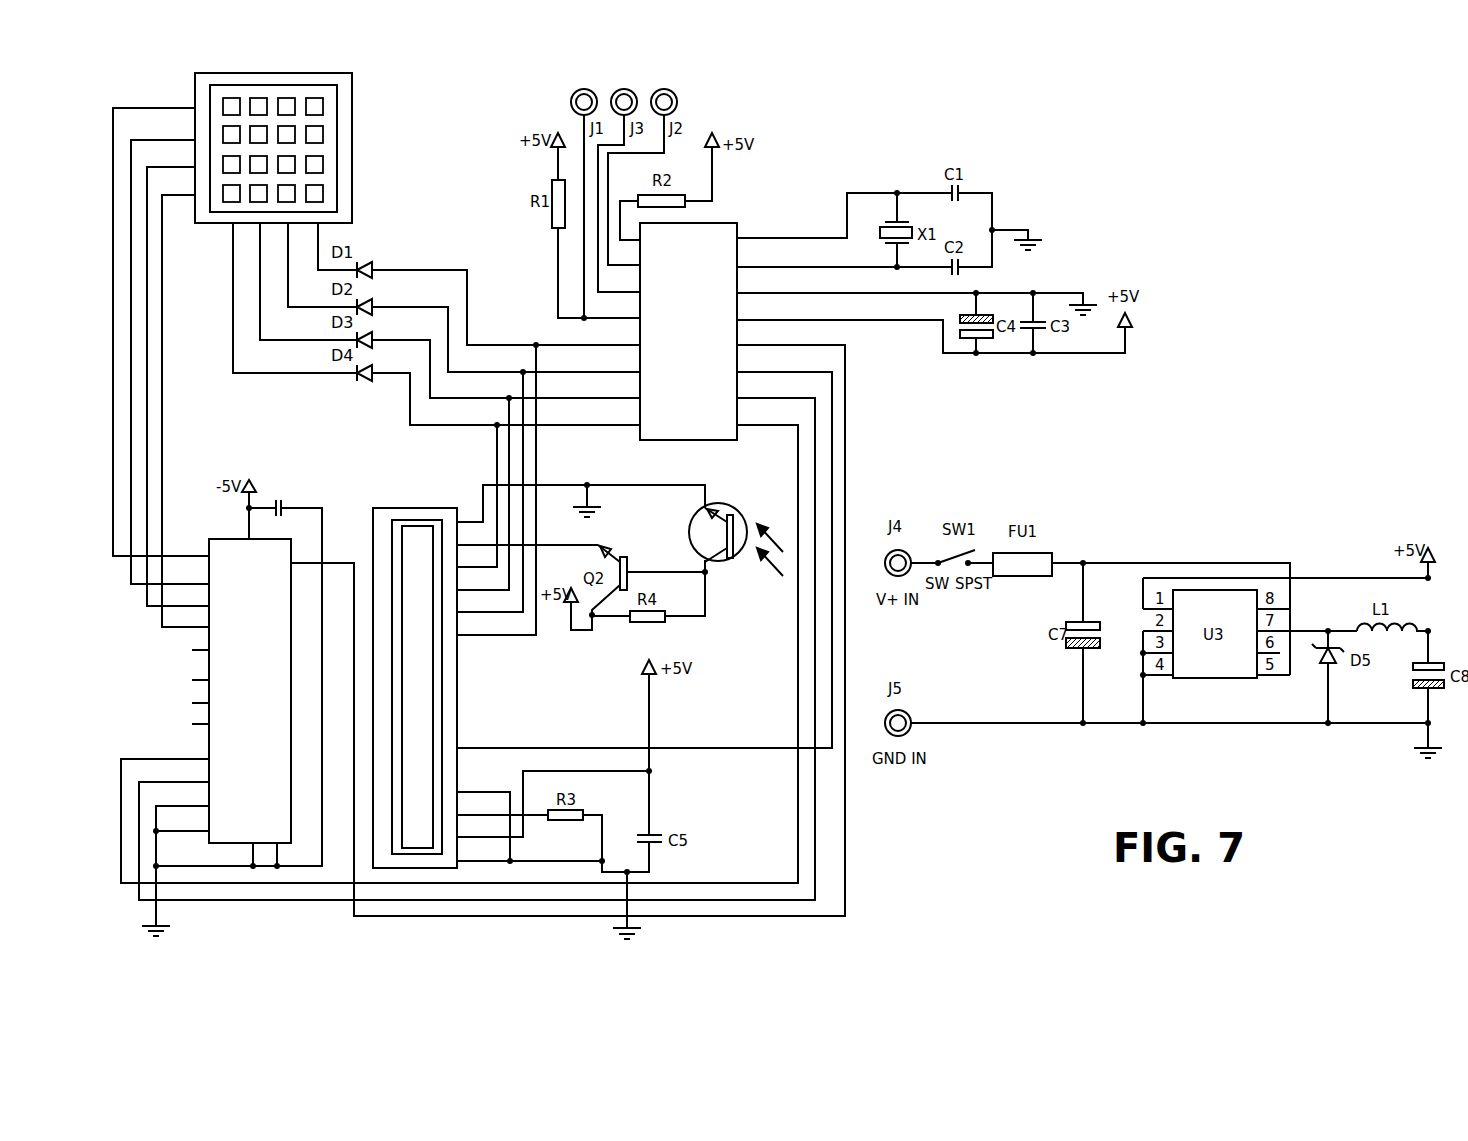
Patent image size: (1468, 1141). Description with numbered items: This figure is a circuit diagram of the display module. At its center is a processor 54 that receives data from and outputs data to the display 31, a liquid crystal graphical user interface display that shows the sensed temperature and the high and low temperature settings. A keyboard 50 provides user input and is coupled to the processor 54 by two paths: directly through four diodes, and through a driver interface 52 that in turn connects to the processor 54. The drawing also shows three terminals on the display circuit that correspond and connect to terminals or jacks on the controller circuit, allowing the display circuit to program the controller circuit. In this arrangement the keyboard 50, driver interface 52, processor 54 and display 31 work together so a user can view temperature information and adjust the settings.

The keyboard 50 is at (343, 185).
The processor 54 is at (688, 248).
The driver interface 52 is at (230, 843).
The display 31 is at (415, 870).